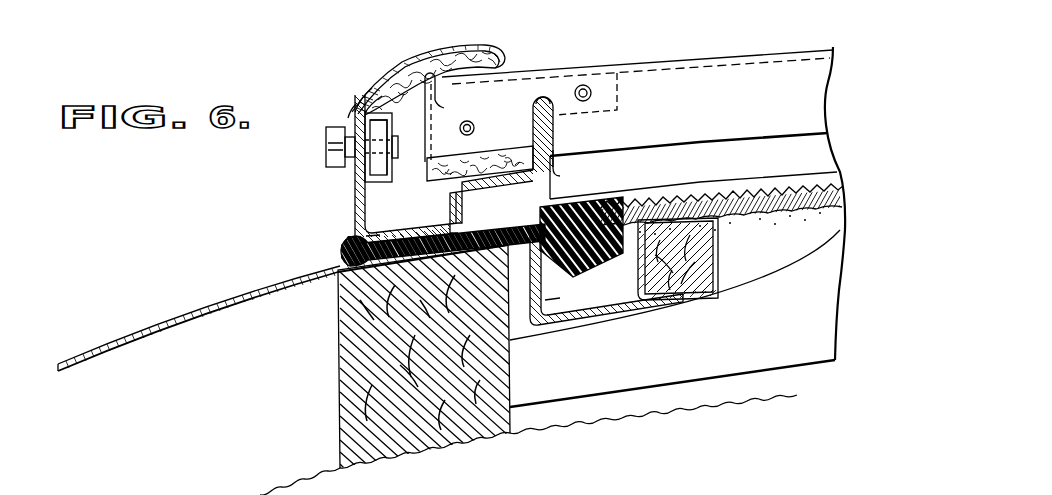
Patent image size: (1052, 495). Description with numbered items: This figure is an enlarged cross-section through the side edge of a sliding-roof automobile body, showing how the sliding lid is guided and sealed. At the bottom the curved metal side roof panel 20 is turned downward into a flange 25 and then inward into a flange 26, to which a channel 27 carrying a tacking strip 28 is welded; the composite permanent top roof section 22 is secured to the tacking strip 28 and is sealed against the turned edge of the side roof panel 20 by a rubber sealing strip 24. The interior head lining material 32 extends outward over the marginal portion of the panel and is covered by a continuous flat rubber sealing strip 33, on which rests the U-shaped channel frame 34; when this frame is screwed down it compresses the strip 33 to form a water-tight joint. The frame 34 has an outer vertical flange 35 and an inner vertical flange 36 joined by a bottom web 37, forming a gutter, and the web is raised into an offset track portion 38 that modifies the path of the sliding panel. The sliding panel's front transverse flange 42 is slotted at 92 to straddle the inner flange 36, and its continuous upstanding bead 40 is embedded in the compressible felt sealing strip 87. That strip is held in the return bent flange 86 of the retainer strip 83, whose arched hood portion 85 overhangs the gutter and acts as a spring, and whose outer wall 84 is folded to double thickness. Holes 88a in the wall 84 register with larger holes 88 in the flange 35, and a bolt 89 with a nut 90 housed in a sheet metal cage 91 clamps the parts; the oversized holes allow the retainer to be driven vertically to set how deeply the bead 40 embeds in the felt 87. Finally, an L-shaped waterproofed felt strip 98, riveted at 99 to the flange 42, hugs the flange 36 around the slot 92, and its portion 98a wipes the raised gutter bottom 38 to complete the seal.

The side roof panel 20 is at (216, 303).
The permanent top roof section 22 is at (729, 190).
The rubber sealing strip 24 is at (612, 200).
The downward flange 25 is at (556, 304).
The inwardly directed flange 26 is at (598, 318).
The channel 27 is at (720, 264).
The tacking strip 28 is at (690, 294).
The head lining material 32 is at (545, 432).
The flat rubber sealing strip 33 is at (340, 284).
The U-shaped channel frame 34 is at (345, 234).
The outer vertical side flange 35 is at (370, 234).
The inner vertical side flange 36 is at (571, 114).
The bottom web 37 is at (408, 228).
The raised track portion 38 is at (485, 160).
The upstanding bead 40 is at (440, 96).
The front transverse flange section 42 is at (655, 80).
The retainer strip 83 is at (494, 46).
The outer vertical wall 84 is at (347, 185).
The arched hood portion 85 is at (440, 55).
The return bent flange 86 is at (542, 96).
The compressible sealing and insulating strip 87 is at (420, 58).
The hole in gutter flange 88 is at (355, 110).
The hole in retainer wall 88a is at (350, 110).
The bolt 89 is at (352, 128).
The nut 90 is at (385, 124).
The sheet metal cage 91 is at (352, 190).
The slot 92 is at (553, 158).
The L-shaped felt strip 98 is at (548, 84).
The wiping portion 98a is at (470, 192).
The rivet 99 is at (592, 85).